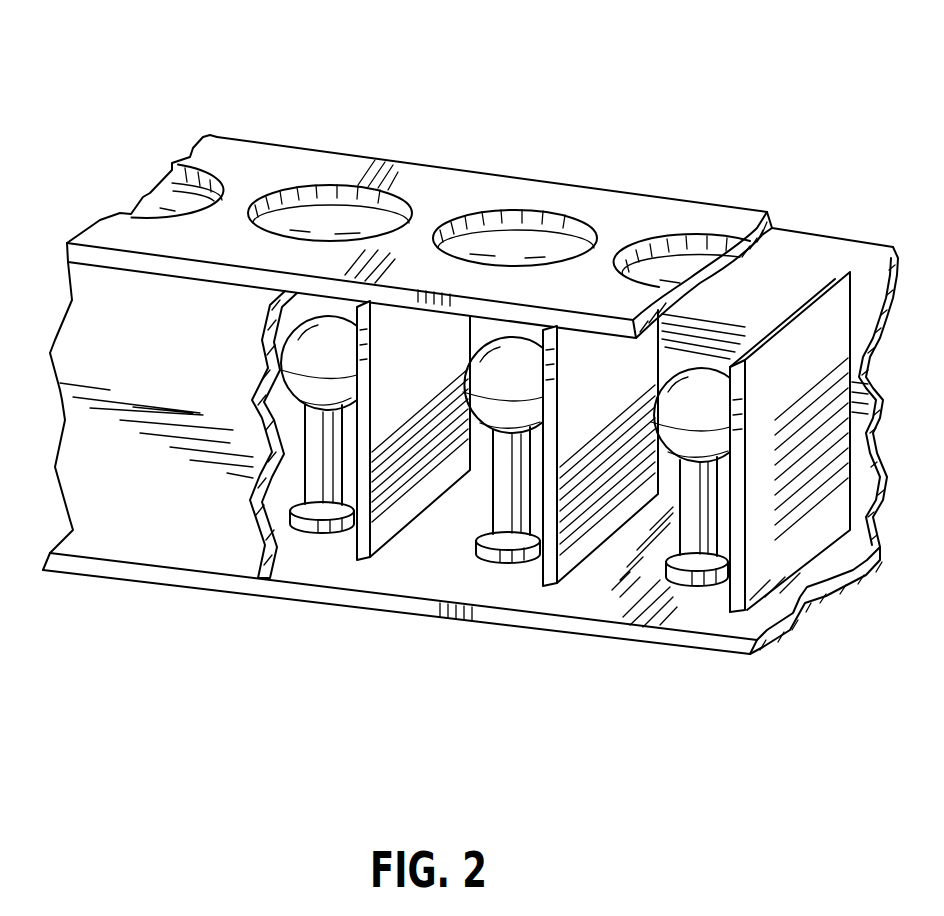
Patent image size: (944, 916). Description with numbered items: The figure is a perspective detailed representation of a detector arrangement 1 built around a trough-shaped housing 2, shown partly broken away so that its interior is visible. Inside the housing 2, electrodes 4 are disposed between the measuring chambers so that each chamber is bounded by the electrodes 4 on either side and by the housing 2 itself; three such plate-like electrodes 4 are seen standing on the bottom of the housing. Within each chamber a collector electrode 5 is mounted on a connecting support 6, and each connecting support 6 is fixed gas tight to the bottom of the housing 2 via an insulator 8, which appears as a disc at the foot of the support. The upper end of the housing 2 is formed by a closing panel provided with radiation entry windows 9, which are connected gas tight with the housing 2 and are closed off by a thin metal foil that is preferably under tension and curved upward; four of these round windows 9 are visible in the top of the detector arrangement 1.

The detector arrangement 1 is at (476, 92).
The trough-shaped housing 2 is at (170, 510).
The electrode 4 is at (790, 353).
The collector electrode 5 is at (513, 353).
The connecting support 6 is at (513, 527).
The insulator 8 is at (327, 527).
The radiation entry window 9 is at (322, 223).